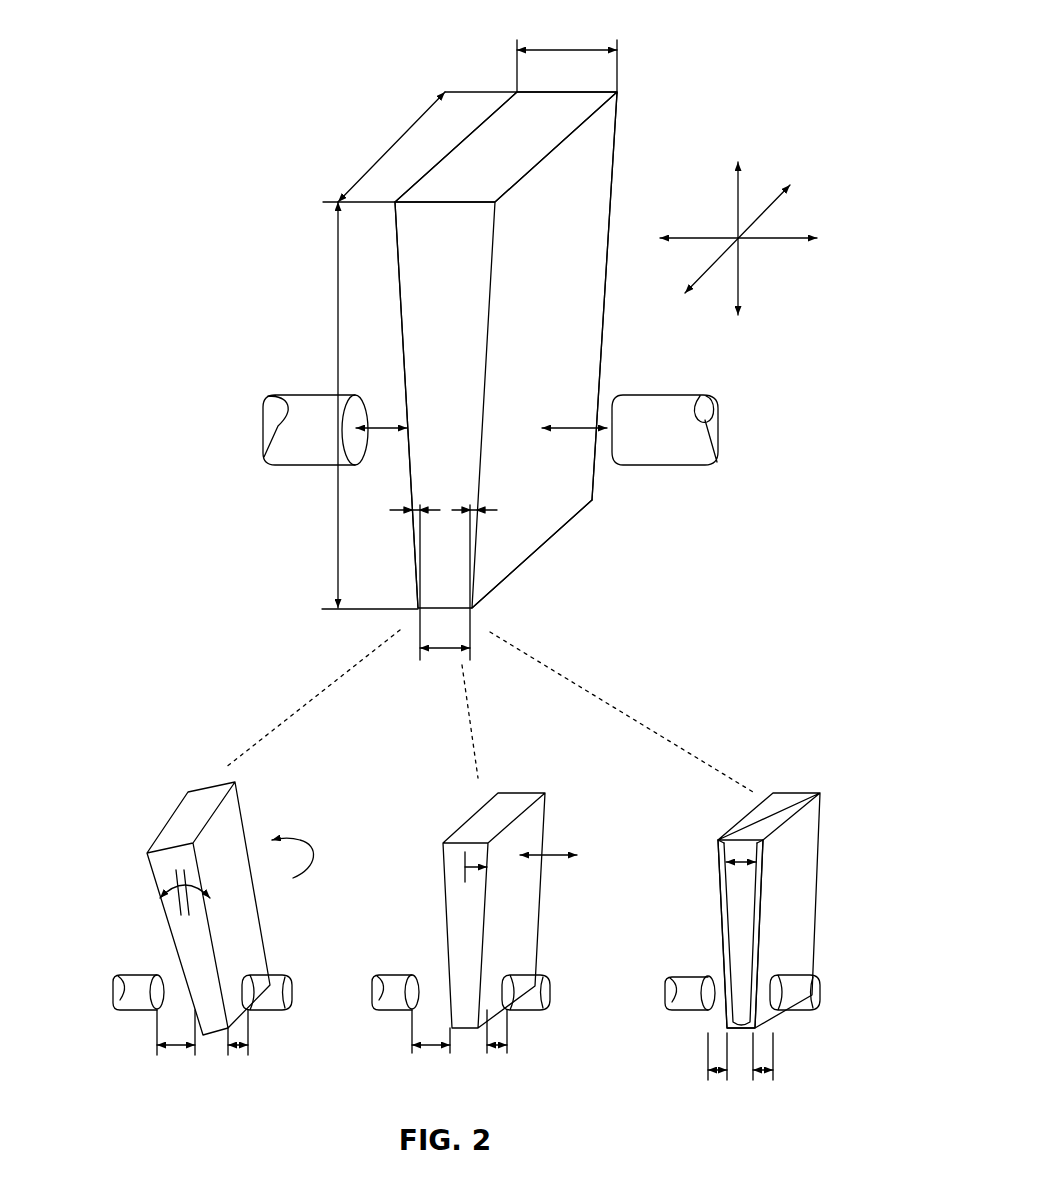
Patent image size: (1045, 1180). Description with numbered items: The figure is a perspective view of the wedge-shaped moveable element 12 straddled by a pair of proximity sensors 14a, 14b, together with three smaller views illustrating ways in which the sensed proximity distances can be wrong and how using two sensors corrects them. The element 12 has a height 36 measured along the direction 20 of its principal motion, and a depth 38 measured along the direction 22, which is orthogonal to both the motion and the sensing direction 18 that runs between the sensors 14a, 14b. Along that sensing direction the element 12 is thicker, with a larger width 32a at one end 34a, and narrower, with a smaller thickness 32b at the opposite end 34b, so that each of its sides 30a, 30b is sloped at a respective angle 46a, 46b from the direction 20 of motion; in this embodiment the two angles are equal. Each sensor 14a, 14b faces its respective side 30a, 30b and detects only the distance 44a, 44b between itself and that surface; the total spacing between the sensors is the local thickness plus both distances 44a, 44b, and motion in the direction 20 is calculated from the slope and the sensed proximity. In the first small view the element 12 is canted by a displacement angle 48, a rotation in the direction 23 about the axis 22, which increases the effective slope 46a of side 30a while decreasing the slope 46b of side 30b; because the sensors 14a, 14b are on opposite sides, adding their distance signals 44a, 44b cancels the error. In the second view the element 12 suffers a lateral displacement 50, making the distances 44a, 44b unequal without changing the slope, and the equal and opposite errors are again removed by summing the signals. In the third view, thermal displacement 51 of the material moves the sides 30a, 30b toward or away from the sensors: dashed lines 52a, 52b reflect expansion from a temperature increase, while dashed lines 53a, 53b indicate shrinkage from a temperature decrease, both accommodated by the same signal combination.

The moveable element 12 is at (536, 306).
The sensor 14a is at (312, 397).
The sensor 14b is at (677, 397).
The direction 18 is at (765, 243).
The direction 20 is at (733, 197).
The direction 22 is at (772, 193).
The direction 23 is at (318, 845).
The side 30a is at (393, 337).
The side 30b is at (597, 170).
The width 32a is at (578, 48).
The thickness 32b is at (447, 653).
The end 34a is at (538, 106).
The end 34b is at (522, 533).
The height 36 is at (337, 540).
The depth 38 is at (407, 137).
The distance 44a is at (390, 427).
The distance 44b is at (578, 425).
The angle 46a is at (403, 510).
The angle 46b is at (487, 510).
The displacement angle 48 is at (152, 902).
The lateral displacement 50 is at (442, 858).
The thermal displacement 51 is at (738, 867).
The dashed line 52a is at (717, 877).
The dashed line 52b is at (724, 847).
The dashed line 53a is at (727, 840).
The dashed line 53b is at (753, 840).